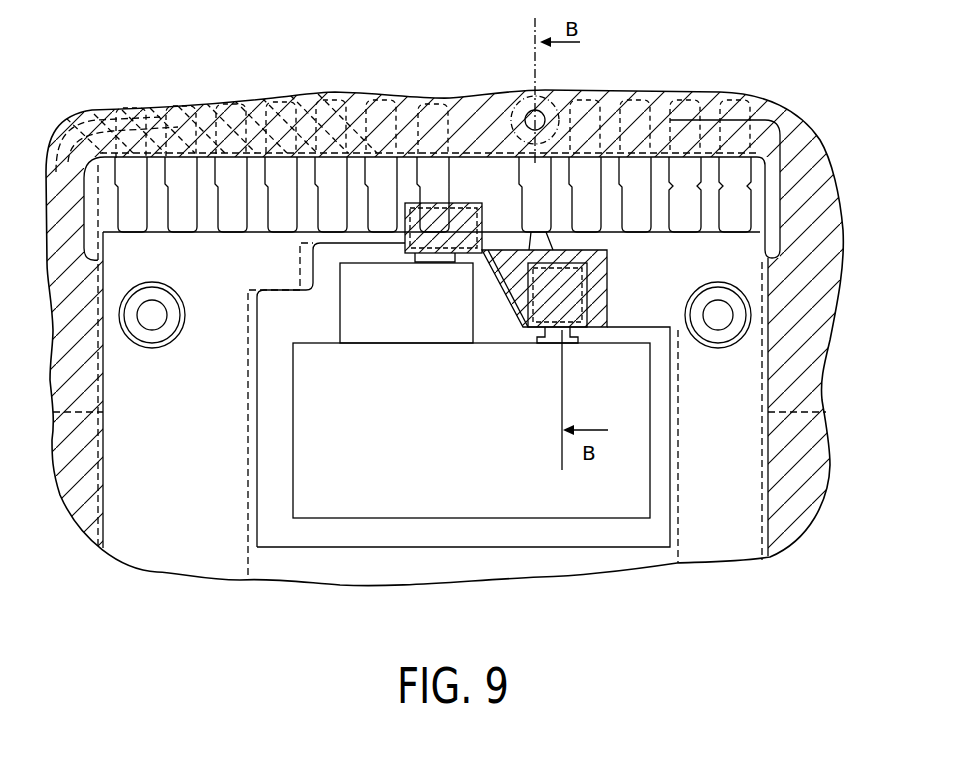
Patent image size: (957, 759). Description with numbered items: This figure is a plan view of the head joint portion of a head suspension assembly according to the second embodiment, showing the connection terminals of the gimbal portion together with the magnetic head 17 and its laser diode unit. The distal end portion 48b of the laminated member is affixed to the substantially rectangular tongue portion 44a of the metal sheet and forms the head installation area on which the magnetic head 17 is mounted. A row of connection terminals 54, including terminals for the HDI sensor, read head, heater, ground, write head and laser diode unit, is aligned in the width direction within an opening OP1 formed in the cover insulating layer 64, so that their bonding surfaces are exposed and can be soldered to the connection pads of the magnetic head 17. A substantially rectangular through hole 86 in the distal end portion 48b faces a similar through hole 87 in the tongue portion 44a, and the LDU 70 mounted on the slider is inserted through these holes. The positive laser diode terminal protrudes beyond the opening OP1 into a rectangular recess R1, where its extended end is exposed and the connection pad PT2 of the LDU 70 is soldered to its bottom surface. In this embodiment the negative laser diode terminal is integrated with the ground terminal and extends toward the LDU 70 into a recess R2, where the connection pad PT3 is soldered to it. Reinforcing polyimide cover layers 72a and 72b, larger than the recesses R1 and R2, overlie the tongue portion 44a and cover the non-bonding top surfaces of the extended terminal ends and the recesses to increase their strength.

The magnetic head 17 is at (743, 478).
The tongue portion 44a is at (718, 547).
The distal end portion 48b is at (200, 110).
The connection terminals 54 is at (305, 173).
The cover insulating layer 64 is at (807, 137).
The laser diode unit (LDU) 70 is at (423, 500).
The cover layer 72a is at (408, 244).
The cover layer 72b is at (610, 263).
The through hole 86 is at (455, 440).
The through hole 87 is at (257, 478).
The opening OP1 is at (473, 160).
The connection pad PT2 is at (432, 262).
The connection pad PT3 is at (546, 340).
The recess R1 is at (463, 244).
The recess R2 is at (613, 307).